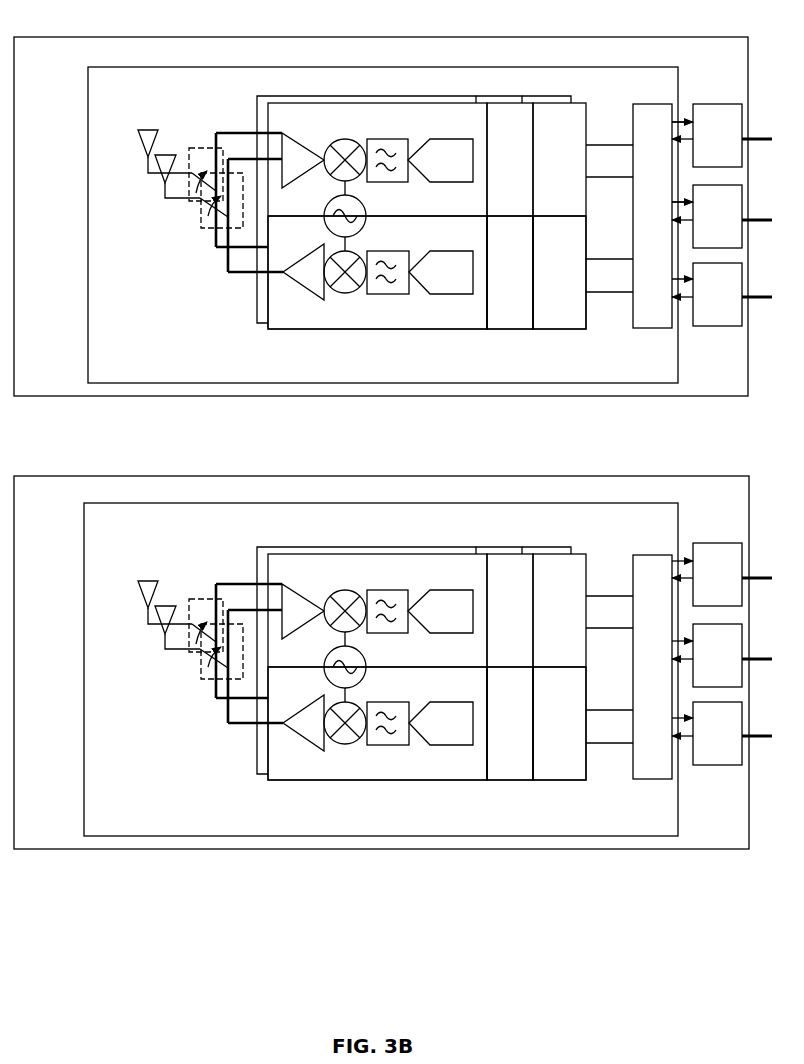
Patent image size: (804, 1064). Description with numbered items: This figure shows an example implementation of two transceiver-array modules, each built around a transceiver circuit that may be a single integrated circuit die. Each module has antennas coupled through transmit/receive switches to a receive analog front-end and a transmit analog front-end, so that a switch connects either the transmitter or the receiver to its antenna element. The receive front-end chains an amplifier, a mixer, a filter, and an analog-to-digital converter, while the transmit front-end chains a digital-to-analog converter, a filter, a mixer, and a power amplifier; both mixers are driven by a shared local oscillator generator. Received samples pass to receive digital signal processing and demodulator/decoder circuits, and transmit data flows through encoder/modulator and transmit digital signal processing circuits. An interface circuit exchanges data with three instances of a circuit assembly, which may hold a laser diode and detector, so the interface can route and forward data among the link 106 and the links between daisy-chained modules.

The link 106 is at (761, 292).